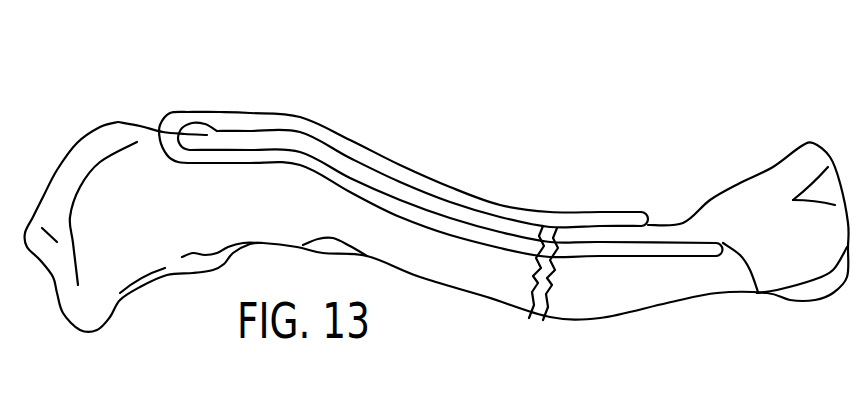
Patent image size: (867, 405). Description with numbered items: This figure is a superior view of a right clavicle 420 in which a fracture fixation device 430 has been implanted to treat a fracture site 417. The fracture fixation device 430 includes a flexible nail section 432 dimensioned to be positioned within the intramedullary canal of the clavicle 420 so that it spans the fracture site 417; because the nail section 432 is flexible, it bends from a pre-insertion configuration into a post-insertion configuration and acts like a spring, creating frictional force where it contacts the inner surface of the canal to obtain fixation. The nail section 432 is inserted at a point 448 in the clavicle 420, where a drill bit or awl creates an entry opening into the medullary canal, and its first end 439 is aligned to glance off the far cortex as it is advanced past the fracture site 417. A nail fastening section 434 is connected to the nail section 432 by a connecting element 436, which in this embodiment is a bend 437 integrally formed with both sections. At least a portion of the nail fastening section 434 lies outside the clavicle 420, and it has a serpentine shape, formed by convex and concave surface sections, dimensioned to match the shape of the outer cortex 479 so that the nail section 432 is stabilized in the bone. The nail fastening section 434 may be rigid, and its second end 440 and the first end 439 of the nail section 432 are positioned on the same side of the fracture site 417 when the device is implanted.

The clavicle 420 is at (767, 198).
The fracture fixation device 430 is at (261, 93).
The nail section 432 is at (642, 250).
The nail fastening section 434 is at (489, 198).
The connecting element 436 is at (172, 92).
The bend 437 is at (193, 119).
The first end 439 is at (723, 245).
The second end 440 is at (645, 213).
The point 448 is at (165, 132).
The outer cortex 479 is at (457, 205).
The fracture site 417 is at (533, 320).